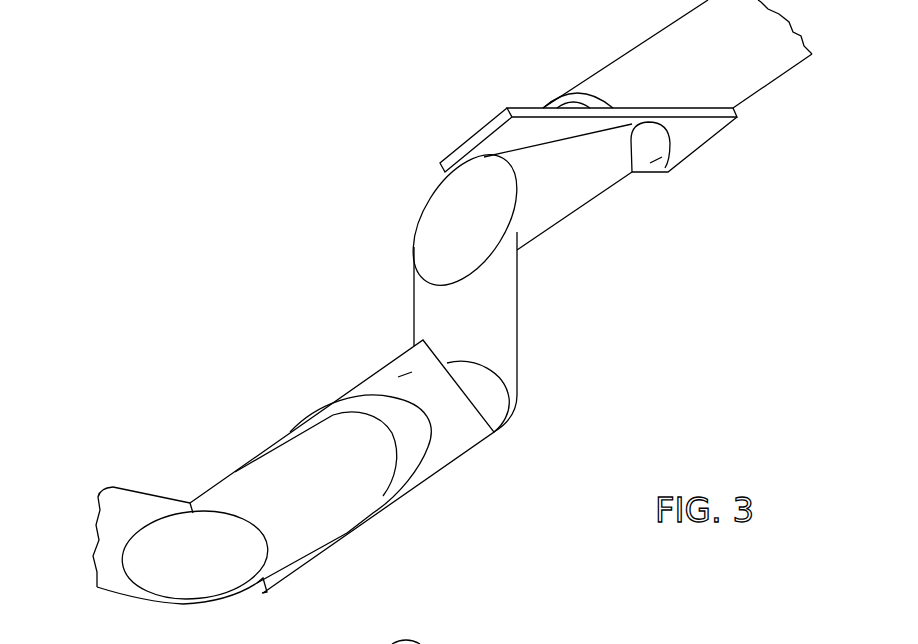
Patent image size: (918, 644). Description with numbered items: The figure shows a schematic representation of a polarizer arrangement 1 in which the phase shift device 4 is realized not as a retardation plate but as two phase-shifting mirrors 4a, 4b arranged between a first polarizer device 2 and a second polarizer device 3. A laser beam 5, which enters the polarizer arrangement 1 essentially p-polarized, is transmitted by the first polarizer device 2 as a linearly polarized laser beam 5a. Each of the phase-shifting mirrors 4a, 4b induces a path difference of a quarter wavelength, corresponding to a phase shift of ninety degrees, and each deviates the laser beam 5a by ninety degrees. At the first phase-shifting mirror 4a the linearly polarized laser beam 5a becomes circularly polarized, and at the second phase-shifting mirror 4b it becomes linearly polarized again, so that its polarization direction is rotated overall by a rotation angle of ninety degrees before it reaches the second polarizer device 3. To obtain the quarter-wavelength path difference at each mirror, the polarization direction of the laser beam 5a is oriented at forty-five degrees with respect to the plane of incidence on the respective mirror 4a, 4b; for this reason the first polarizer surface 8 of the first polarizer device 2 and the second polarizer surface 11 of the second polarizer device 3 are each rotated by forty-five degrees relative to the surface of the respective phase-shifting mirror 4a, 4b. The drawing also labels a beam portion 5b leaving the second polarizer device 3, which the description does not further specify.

The polarizer arrangement 1 is at (204, 203).
The first polarizer device 2 is at (367, 351).
The second polarizer device 3 is at (543, 89).
The phase shift device 4 is at (578, 358).
The first phase-shifting mirror 4a is at (525, 419).
The second phase-shifting mirror 4b is at (457, 193).
The laser beam 5 is at (297, 455).
The linearly polarized laser beam 5a is at (485, 413).
The second trough 5b is at (758, 77).
The first polarizer surface 8 is at (412, 372).
The second polarizer surface 11 is at (666, 156).